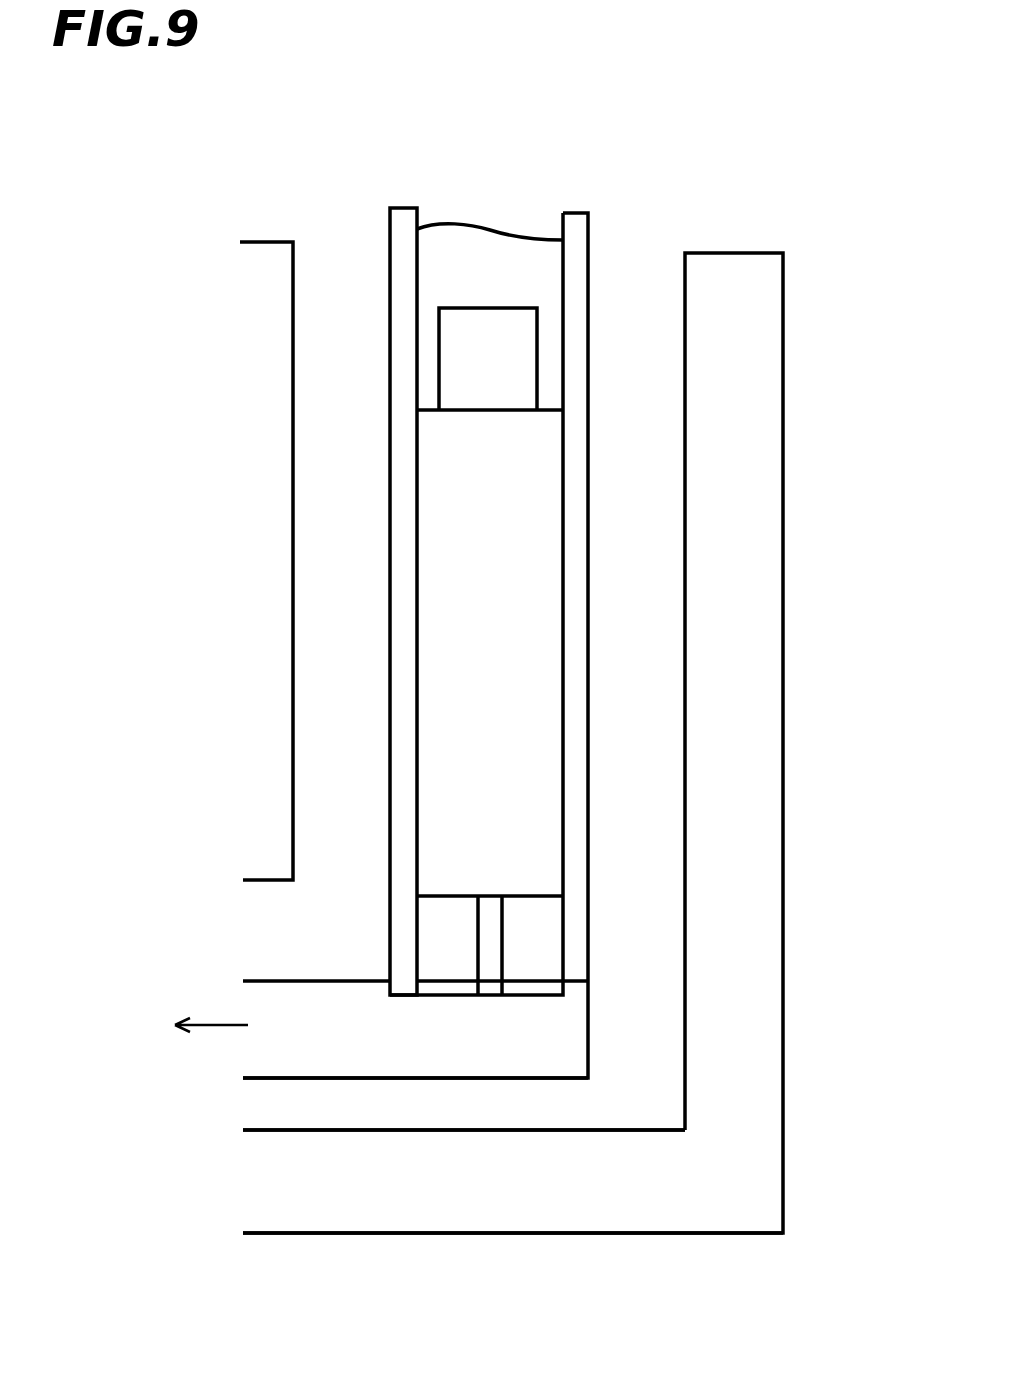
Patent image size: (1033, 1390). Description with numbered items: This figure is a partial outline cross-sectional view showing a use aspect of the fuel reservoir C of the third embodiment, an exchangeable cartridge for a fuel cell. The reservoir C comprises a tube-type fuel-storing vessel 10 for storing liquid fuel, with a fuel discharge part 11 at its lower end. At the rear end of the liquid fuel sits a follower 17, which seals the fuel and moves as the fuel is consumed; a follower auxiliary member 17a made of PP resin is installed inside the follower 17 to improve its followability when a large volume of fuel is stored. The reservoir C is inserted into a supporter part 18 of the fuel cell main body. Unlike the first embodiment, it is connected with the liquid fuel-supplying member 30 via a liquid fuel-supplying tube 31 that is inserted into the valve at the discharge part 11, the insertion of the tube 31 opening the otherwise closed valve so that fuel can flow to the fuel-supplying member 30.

The fuel-storing vessel 10 is at (392, 487).
The fuel discharge part 11 is at (460, 905).
The follower 17 is at (490, 250).
The follower auxiliary member 17a is at (456, 360).
The supporter part 18 is at (273, 252).
The fuel-supplying member 30 is at (388, 1063).
The liquid fuel-supplying tube 31 is at (478, 930).
The fuel reservoir C is at (617, 175).